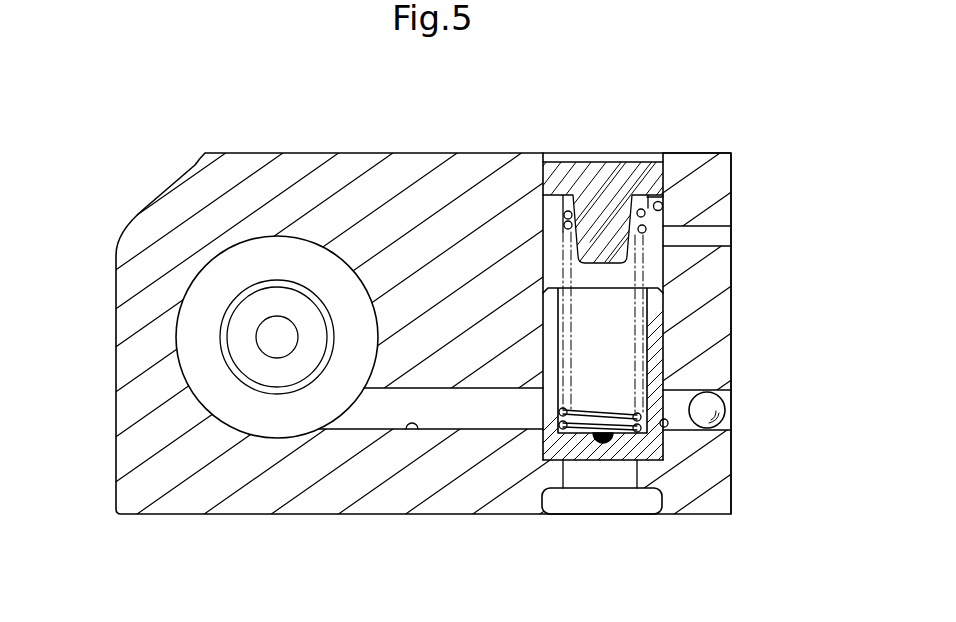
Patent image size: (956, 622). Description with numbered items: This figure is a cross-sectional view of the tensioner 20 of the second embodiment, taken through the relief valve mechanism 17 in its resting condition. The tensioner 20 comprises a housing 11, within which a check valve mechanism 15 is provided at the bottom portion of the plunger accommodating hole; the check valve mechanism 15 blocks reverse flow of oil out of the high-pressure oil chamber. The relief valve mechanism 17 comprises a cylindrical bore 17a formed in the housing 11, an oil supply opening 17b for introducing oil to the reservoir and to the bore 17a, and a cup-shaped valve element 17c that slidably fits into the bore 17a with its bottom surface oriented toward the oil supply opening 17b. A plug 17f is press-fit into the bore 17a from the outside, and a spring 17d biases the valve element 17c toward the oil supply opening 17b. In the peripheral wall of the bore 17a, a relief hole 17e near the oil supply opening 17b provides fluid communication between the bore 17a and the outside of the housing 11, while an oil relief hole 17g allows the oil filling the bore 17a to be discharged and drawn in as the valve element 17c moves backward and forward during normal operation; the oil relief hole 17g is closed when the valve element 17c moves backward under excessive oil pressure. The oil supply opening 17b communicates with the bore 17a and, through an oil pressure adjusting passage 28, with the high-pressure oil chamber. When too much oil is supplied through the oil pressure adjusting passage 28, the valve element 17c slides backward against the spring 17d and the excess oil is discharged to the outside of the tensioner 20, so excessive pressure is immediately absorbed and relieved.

The housing 11 is at (360, 168).
The check valve mechanism 15 is at (213, 332).
The relief valve mechanism 17 is at (597, 358).
The cylindrical bore 17a is at (667, 201).
The oil supply opening 17b is at (612, 505).
The cup-shaped valve element 17c is at (655, 348).
The spring 17d is at (637, 207).
The relief hole 17e is at (667, 426).
The plug 17f is at (571, 158).
The oil relief hole 17g is at (714, 240).
The tensioner 20 is at (700, 128).
The oil pressure adjusting passage 28 is at (405, 431).